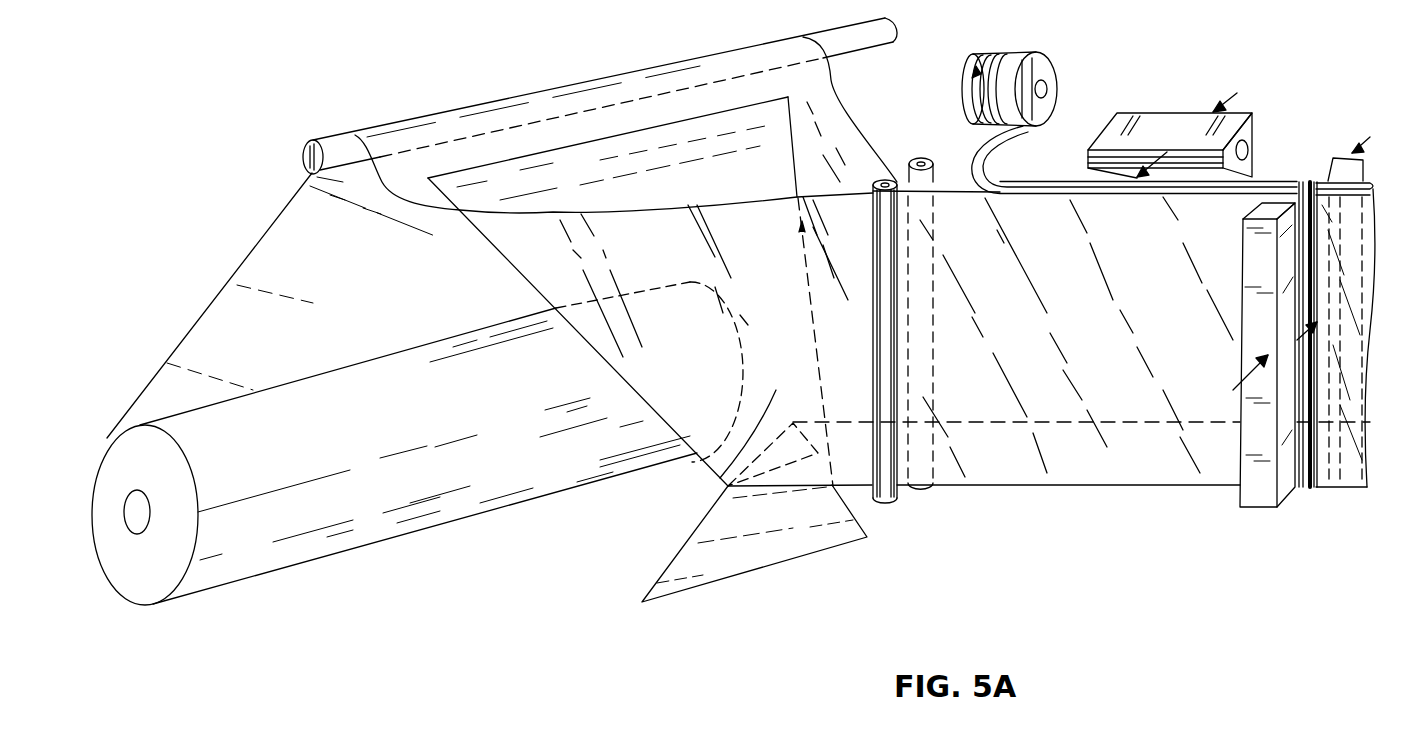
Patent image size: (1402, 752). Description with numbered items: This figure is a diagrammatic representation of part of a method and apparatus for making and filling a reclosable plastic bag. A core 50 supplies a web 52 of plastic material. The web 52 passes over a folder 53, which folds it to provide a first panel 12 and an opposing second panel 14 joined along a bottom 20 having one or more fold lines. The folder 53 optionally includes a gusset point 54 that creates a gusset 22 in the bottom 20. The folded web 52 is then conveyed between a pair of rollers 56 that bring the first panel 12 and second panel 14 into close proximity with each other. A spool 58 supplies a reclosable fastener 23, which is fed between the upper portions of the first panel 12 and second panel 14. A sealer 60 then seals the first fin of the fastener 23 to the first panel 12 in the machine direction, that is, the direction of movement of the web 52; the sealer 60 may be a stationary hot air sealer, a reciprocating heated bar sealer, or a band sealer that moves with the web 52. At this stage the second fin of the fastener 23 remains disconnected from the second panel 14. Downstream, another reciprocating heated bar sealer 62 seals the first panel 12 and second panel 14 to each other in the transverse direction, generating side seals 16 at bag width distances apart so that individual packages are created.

The first panel 12 is at (825, 125).
The second panel 14 is at (720, 478).
The side seal 16 is at (1305, 488).
The bottom 20 is at (1027, 502).
The gusset 22 is at (1133, 428).
The reclosable fastener 23 is at (992, 153).
The core 50 is at (148, 572).
The web 52 is at (268, 257).
The folder 53 is at (670, 137).
The gusset point 54 is at (803, 547).
The rollers 56 is at (897, 178).
The spool 58 is at (1050, 101).
The sealer 60 is at (1188, 116).
The reciprocating heated bar sealer 62 is at (1262, 503).